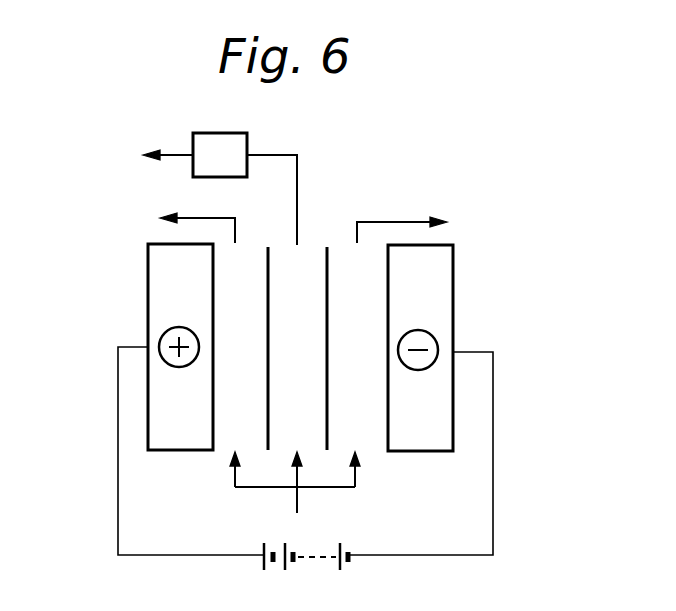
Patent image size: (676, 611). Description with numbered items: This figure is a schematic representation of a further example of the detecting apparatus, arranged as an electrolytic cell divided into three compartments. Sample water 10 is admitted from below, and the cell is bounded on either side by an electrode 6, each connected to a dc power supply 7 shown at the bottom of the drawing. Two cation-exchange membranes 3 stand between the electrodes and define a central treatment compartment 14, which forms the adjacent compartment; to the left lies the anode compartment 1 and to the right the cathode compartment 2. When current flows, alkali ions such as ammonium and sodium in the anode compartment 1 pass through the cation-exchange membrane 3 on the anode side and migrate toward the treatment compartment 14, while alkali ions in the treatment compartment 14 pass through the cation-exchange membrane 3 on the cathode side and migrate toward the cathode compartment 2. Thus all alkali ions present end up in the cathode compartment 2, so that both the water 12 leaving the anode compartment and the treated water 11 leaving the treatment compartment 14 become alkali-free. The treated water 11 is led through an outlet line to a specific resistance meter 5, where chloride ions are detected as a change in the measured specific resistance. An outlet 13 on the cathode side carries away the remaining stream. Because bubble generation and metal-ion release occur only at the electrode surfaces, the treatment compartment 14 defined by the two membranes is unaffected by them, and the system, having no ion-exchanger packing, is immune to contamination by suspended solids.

The anode compartment 1 is at (233, 433).
The cathode compartment 2 is at (362, 436).
The cation-exchange membrane 3 is at (271, 260).
The specific resistance meter 5 is at (193, 172).
The electrode 6 is at (148, 298).
The dc power supply 7 is at (262, 548).
The sample water 10 is at (297, 507).
The treated water 11 is at (300, 172).
The water leaving the anode compartment 12 is at (214, 222).
The right outlet 13 is at (392, 218).
The treatment compartment 14 is at (298, 433).